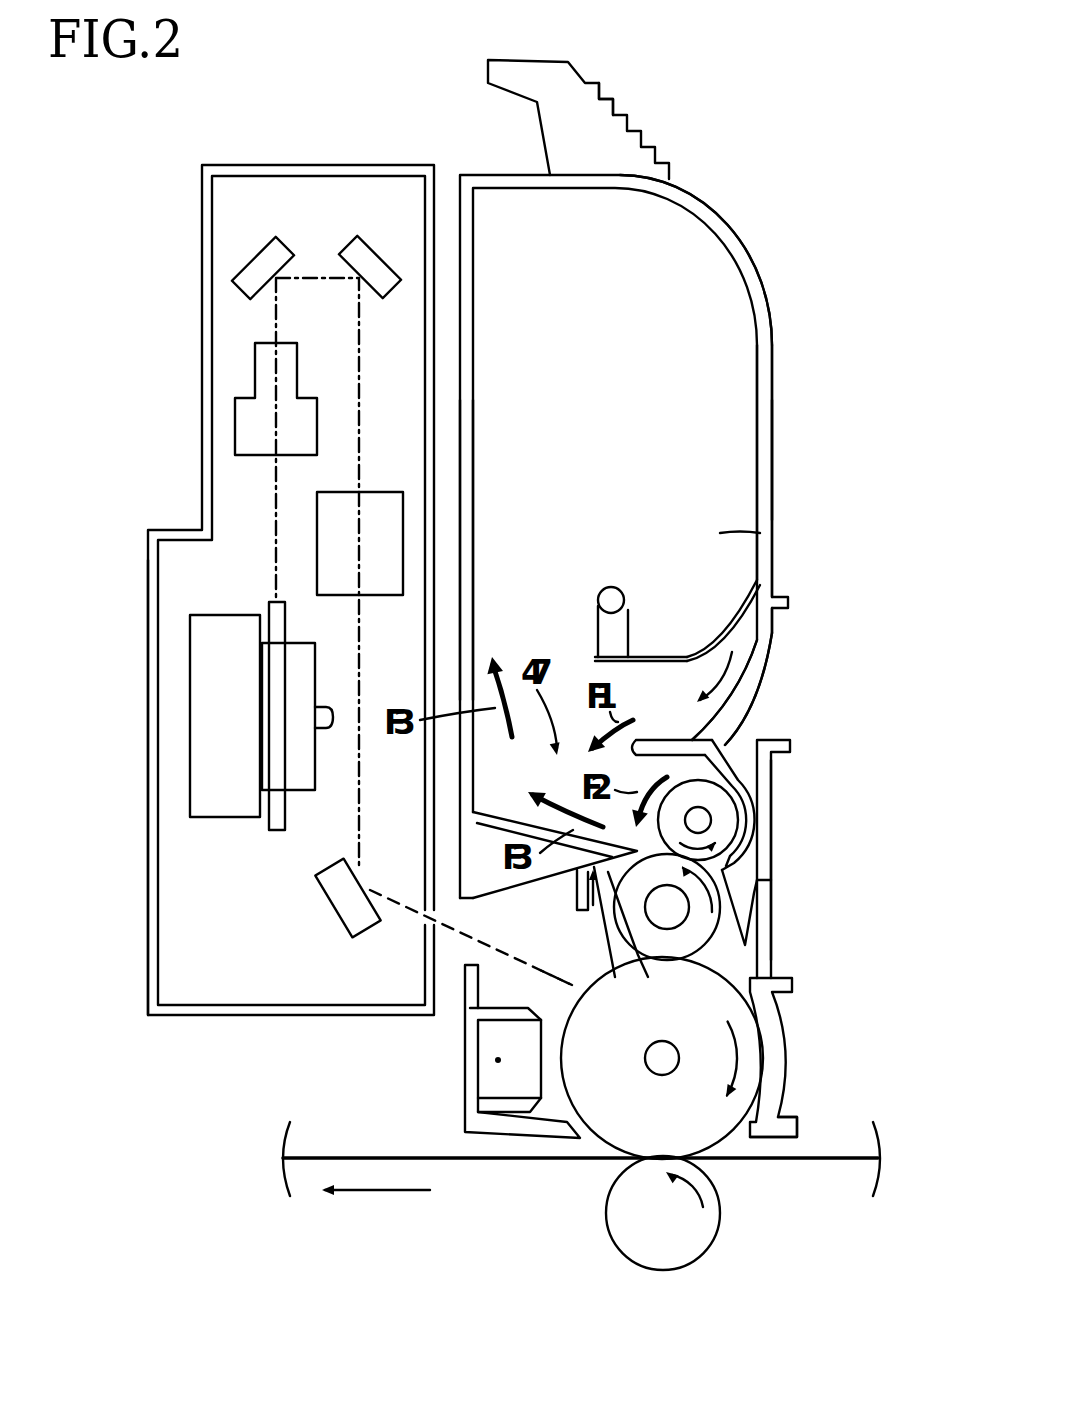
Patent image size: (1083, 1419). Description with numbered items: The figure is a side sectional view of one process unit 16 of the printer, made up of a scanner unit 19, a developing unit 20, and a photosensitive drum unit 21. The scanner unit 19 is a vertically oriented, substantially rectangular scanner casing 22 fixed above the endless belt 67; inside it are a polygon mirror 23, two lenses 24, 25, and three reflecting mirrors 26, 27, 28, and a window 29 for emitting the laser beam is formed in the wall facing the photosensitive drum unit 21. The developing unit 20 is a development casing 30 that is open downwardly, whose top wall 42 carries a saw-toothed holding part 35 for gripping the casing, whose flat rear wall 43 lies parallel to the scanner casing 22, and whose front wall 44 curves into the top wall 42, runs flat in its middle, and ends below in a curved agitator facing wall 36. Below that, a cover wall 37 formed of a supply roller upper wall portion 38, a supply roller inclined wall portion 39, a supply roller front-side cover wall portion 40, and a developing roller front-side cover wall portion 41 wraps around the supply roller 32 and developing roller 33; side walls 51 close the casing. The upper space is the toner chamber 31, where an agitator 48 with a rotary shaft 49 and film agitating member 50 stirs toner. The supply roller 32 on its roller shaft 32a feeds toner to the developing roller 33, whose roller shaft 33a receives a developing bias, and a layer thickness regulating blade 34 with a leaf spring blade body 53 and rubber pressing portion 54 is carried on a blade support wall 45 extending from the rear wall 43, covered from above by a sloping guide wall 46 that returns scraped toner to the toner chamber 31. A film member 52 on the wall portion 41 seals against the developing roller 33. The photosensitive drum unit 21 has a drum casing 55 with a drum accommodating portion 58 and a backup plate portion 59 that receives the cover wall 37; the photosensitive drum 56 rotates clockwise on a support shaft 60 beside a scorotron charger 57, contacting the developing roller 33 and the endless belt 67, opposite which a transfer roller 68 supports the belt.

The process unit 16 is at (427, 83).
The scanner unit 19 is at (150, 665).
The developing unit 20 is at (787, 460).
The photosensitive drum unit 21 is at (807, 1063).
The scanner casing 22 is at (148, 876).
The polygon mirror 23 is at (237, 818).
The lens 24 is at (253, 380).
The lens 25 is at (405, 500).
The reflecting mirror 26 is at (240, 260).
The reflecting mirror 27 is at (372, 250).
The reflecting mirror 28 is at (332, 912).
The window 29 is at (430, 924).
The development casing 30 is at (477, 167).
The toner chamber 31 is at (685, 245).
The supply roller 32 is at (742, 853).
The roller shaft 32a is at (703, 810).
The developing roller 33 is at (693, 963).
The roller shaft 33a is at (683, 923).
The layer thickness regulating blade 34 is at (566, 964).
The holding part 35 is at (603, 102).
The agitator facing wall 36 is at (773, 633).
The cover wall 37 is at (753, 782).
The supply roller upper wall portion 38 is at (637, 740).
The supply roller inclined wall portion 39 is at (745, 737).
The supply roller front-side cover wall portion 40 is at (767, 823).
The developing roller front-side cover wall portion 41 is at (760, 898).
The top wall 42 is at (588, 172).
The rear wall 43 is at (458, 360).
The front wall 44 is at (773, 392).
The blade support wall 45 is at (532, 893).
The guide wall 46 is at (502, 810).
The agitator 48 is at (648, 645).
The rotary shaft 49 is at (608, 587).
The agitating member 50 is at (714, 640).
The side walls 51 is at (760, 533).
The film member 52 is at (735, 913).
The blade body 53 is at (613, 977).
The pressing portion 54 is at (642, 965).
The drum casing 55 is at (460, 1078).
The photosensitive drum 56 is at (597, 1140).
The scorotron charger 57 is at (543, 1060).
The drum accommodating portion 58 is at (780, 1103).
The backup plate portion 59 is at (777, 812).
The support shaft 60 is at (663, 1076).
The endless belt 67 is at (796, 1160).
The transfer roller 68 is at (710, 1240).